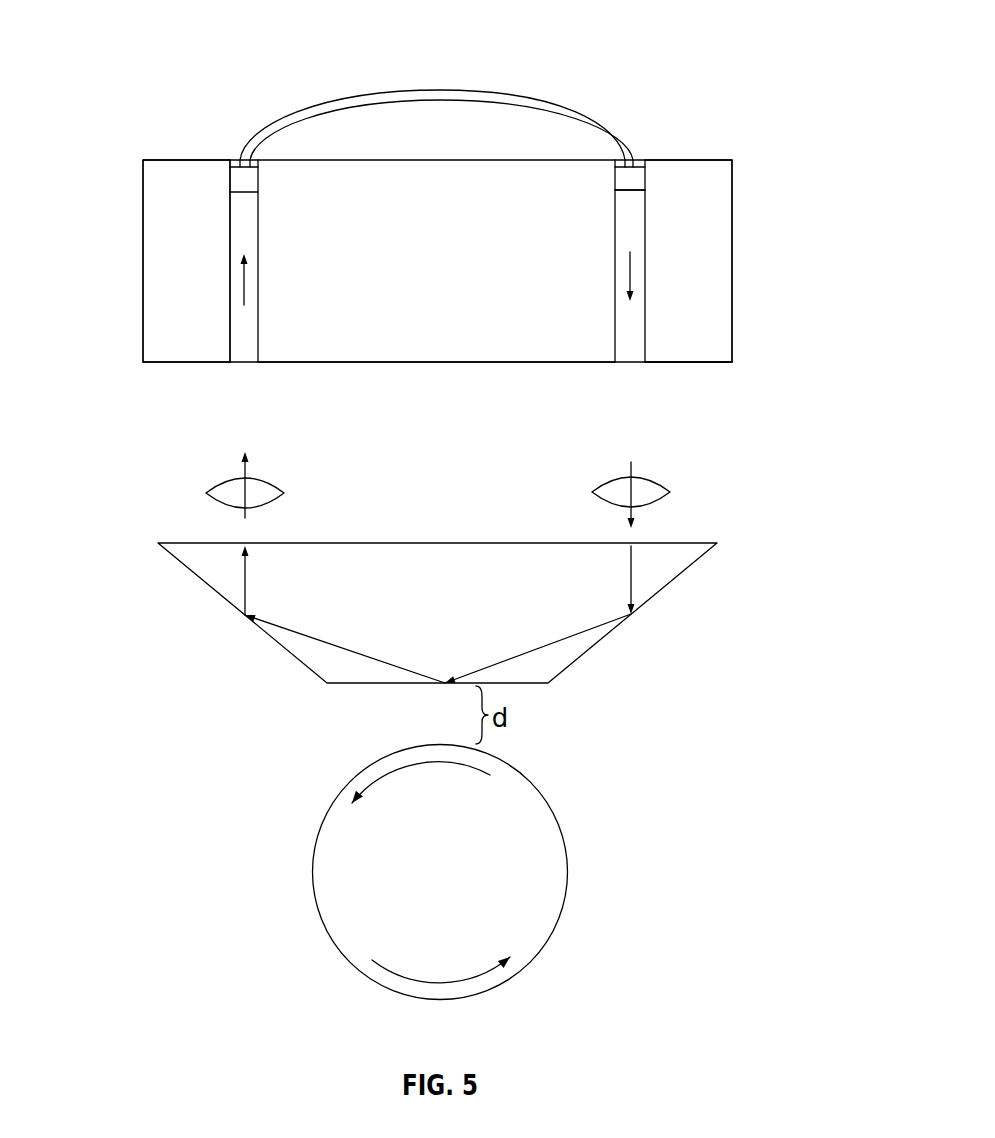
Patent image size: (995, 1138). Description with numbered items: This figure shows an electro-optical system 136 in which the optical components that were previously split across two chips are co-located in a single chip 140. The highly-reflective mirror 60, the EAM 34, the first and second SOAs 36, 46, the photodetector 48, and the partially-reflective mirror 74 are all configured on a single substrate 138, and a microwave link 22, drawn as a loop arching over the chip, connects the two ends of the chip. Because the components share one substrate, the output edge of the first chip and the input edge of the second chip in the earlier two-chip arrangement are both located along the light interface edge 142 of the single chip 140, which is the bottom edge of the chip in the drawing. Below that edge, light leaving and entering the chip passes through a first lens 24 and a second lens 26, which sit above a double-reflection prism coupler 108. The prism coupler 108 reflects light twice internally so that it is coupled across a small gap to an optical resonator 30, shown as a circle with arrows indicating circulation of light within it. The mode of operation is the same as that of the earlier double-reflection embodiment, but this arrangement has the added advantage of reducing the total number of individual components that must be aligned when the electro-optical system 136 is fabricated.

The electro-optical system 136 is at (149, 46).
The microwave link 22 is at (445, 88).
The photodetector 48 is at (195, 168).
The partially-reflective mirror 74 is at (237, 163).
The highly-reflective mirror 60 is at (625, 160).
The EAM 34 is at (637, 178).
The single chip 140 is at (735, 252).
The single substrate 138 is at (723, 308).
The second SOA 46 is at (242, 352).
The light interface edge 142 is at (323, 363).
The first SOA 36 is at (630, 352).
The second lens 26 is at (265, 480).
The first lens 24 is at (653, 478).
The prism coupler 108 is at (703, 555).
The optical resonator 30 is at (568, 872).